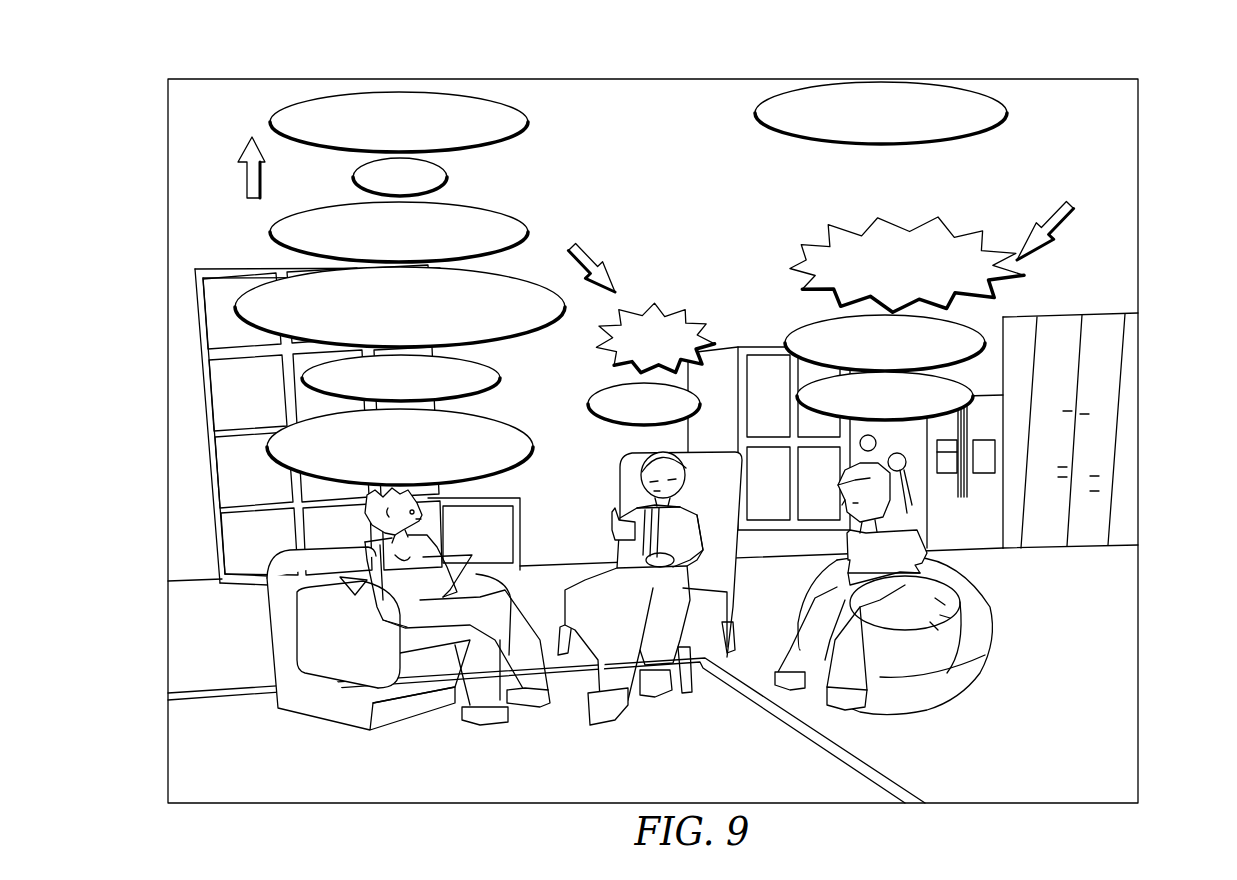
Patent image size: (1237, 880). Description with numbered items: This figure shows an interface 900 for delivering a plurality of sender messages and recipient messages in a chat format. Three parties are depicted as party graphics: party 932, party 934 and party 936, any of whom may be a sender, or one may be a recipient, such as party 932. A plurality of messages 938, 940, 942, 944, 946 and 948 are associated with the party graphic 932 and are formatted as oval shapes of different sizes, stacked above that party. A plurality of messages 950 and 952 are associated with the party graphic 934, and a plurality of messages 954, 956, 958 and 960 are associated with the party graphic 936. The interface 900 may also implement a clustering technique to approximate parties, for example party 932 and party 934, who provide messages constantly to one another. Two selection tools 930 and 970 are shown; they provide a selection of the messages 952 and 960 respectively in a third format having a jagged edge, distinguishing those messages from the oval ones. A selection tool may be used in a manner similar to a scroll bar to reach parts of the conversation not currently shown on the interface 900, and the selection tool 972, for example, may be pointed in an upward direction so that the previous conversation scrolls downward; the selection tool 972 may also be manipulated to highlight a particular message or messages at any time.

The interface 900 is at (1174, 105).
The selection tool 930 is at (594, 263).
The party graphic 932 is at (476, 727).
The party graphic 934 is at (656, 700).
The party graphic 936 is at (830, 716).
The message 938 is at (522, 110).
The message 940 is at (448, 177).
The message 942 is at (529, 235).
The message 944 is at (549, 328).
The message 946 is at (497, 383).
The message 948 is at (531, 461).
The message 950 is at (606, 420).
The message 952 is at (680, 314).
The message 954 is at (789, 334).
The message 956 is at (957, 232).
The message 958 is at (1006, 110).
The message 960 is at (968, 392).
The selection tool 970 is at (1062, 212).
The selection tool 972 is at (246, 170).